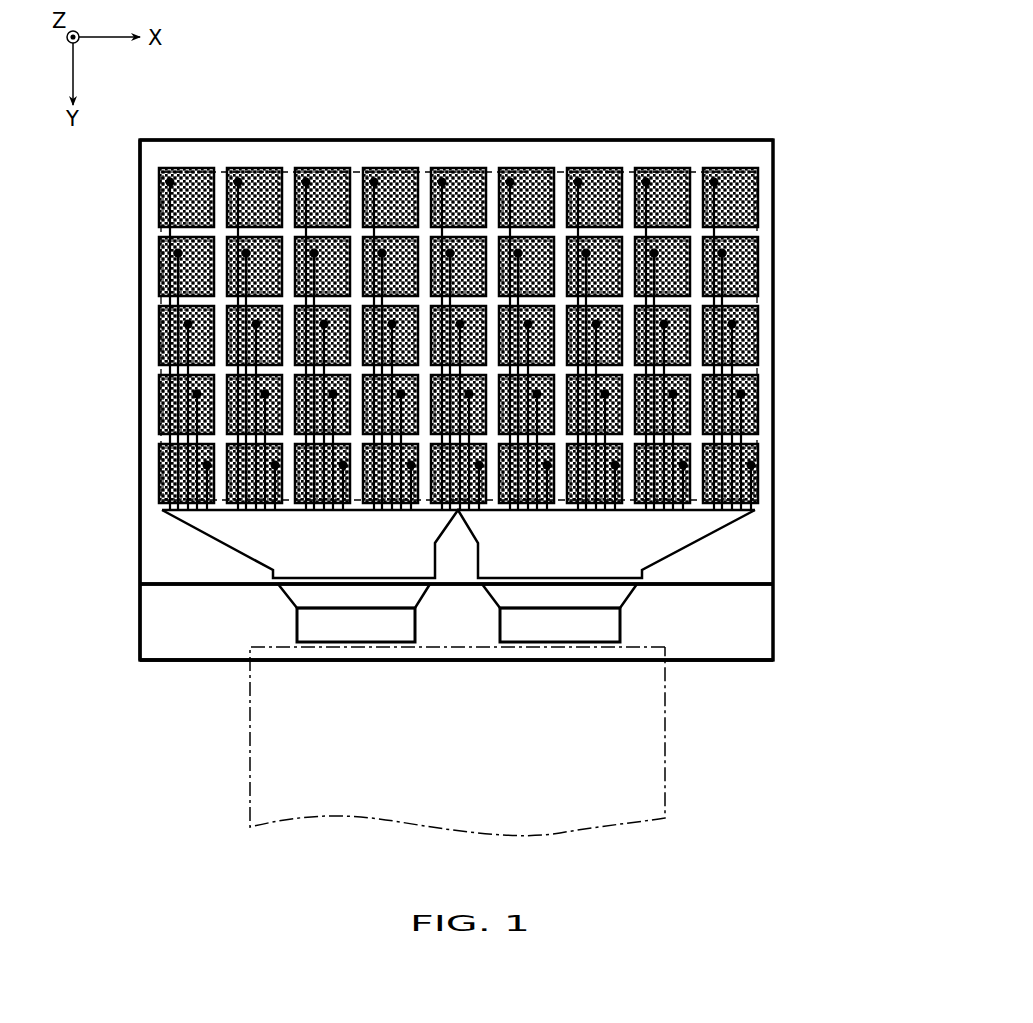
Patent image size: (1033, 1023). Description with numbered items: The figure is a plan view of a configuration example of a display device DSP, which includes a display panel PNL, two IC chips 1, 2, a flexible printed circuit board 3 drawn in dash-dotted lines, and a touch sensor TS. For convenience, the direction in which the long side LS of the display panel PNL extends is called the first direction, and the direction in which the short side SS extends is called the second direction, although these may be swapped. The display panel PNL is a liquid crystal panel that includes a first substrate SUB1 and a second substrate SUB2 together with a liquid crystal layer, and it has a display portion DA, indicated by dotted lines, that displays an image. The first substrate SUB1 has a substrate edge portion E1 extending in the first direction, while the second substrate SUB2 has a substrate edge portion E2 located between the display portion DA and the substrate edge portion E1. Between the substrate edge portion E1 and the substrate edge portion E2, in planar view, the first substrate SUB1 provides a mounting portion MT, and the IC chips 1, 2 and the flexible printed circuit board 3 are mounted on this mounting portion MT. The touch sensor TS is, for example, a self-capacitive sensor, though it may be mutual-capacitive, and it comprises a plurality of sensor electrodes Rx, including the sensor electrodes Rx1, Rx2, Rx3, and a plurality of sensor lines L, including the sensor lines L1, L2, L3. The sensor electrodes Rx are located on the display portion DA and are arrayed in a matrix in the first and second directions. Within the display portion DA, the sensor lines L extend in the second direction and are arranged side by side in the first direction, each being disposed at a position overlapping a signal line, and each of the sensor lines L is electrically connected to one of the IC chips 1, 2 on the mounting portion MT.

The display device DSP is at (724, 90).
The display panel PNL is at (780, 138).
The long side LS is at (319, 138).
The short side SS is at (136, 528).
The touch sensor TS is at (457, 303).
The display portion DA is at (757, 232).
The sensor electrode Rx1 is at (160, 200).
The sensor electrode Rx2 is at (160, 268).
The sensor electrode Rx3 is at (160, 338).
The sensor electrodes Rx is at (756, 468).
The sensor line L1 is at (170, 392).
The sensor line L2 is at (178, 420).
The sensor line L3 is at (288, 439).
The sensor lines L is at (748, 508).
The first substrate SUB1 is at (762, 625).
The second substrate SUB2 is at (762, 552).
The substrate edge portion E1 is at (165, 664).
The substrate edge portion E2 is at (208, 588).
The mounting portion MT is at (271, 625).
The IC chip 1 is at (297, 625).
The IC chip 2 is at (620, 623).
The flexible printed circuit board 3 is at (665, 771).